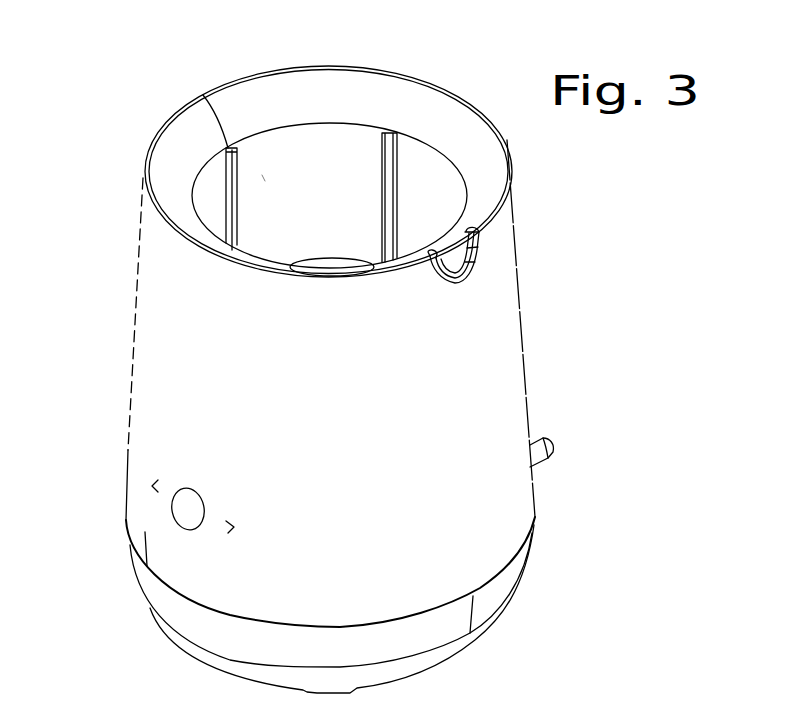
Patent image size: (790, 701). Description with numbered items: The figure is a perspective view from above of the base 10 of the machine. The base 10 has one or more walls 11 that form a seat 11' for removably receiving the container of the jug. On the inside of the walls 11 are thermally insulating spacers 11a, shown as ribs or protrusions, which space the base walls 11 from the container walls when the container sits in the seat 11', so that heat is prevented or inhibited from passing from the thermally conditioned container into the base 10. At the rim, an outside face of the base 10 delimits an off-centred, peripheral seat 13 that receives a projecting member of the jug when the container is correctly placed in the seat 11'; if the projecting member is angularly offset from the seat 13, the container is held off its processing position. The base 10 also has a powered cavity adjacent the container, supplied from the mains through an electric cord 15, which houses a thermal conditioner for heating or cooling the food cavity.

The base 10 is at (147, 435).
The wall 11 is at (328, 171).
The seat 11' is at (206, 98).
The thermally insulating spacer 11a is at (385, 160).
The off-centred seat 13 is at (453, 280).
The electric cord 15 is at (543, 450).